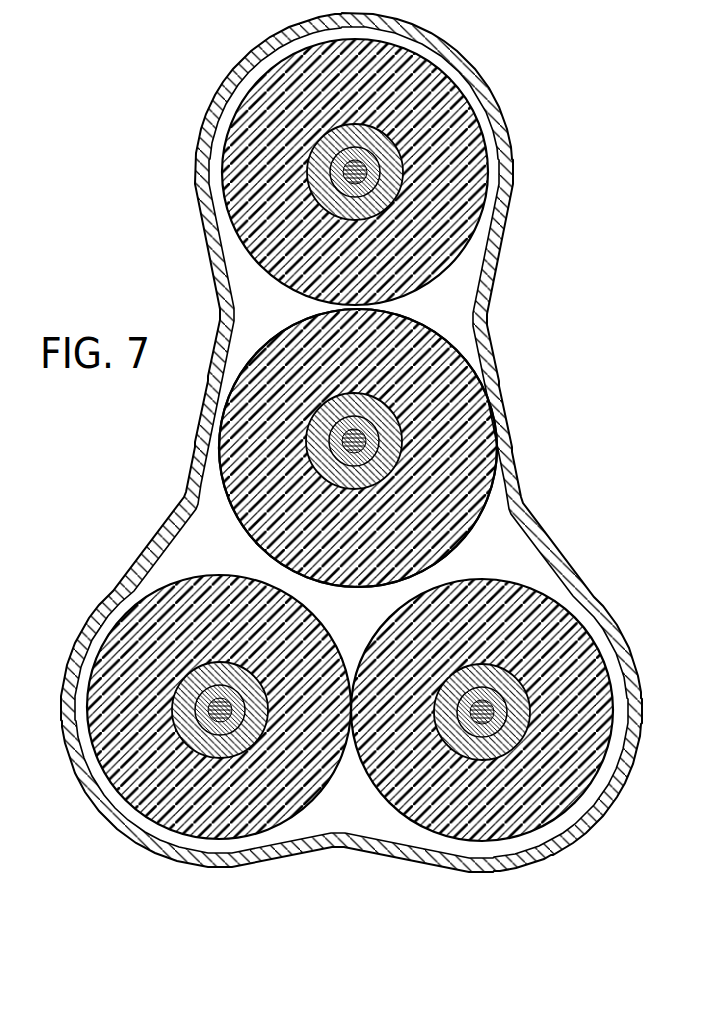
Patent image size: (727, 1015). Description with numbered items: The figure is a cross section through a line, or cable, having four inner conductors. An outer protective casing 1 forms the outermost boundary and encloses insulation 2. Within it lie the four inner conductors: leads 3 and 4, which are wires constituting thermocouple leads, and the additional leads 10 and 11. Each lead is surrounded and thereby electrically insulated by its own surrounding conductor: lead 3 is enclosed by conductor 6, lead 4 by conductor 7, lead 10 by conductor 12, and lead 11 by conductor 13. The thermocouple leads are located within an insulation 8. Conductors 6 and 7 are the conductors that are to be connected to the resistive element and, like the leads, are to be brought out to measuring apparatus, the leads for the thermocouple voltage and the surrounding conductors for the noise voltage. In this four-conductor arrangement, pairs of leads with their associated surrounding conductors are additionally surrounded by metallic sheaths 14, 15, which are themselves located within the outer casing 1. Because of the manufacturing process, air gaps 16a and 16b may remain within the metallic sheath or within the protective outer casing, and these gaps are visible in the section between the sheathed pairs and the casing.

The outer protective casing 1 is at (490, 238).
The insulation 2 is at (458, 412).
The wire (thermocouple lead) 3 is at (343, 218).
The wire (thermocouple lead) 4 is at (333, 465).
The conductor 6 is at (353, 210).
The conductor 7 is at (393, 446).
The insulation 8 is at (373, 175).
The lead 10 is at (264, 700).
The lead 11 is at (478, 703).
The conductor 12 is at (206, 673).
The conductor 13 is at (450, 734).
The metallic sheath 14 is at (444, 66).
The metallic sheath 15 is at (447, 845).
The air gap 16a is at (448, 318).
The air gap 16b is at (515, 542).